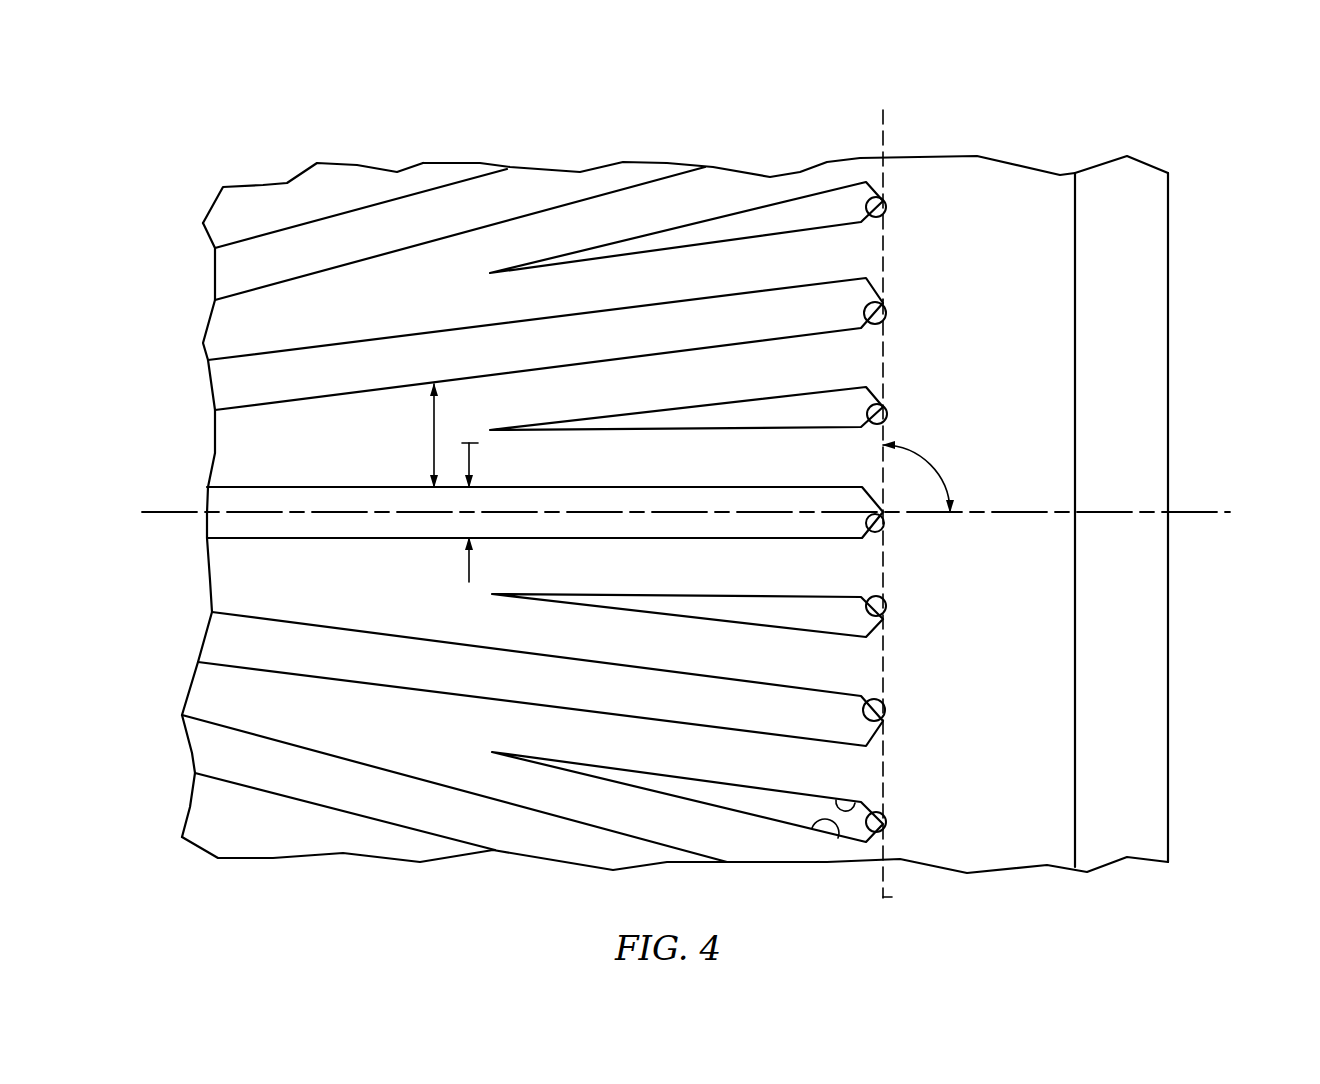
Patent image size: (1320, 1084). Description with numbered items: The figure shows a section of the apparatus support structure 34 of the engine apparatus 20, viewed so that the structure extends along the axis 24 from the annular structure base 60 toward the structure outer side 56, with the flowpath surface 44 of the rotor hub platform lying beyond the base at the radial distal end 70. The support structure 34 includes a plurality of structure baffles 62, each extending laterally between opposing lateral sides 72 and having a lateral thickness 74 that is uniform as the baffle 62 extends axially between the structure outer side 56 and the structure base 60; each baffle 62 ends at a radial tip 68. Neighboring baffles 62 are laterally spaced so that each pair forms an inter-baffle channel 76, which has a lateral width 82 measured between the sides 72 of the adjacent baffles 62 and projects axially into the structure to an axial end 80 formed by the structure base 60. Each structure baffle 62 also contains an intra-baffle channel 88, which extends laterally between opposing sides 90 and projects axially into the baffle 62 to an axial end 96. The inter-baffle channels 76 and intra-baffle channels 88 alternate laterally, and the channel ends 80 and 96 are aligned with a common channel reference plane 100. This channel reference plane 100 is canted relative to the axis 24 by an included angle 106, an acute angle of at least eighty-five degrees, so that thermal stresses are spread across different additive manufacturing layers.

The engine apparatus 20 is at (1230, 145).
The axis 24 is at (1217, 513).
The apparatus support structure 34 is at (977, 133).
The flowpath surface 44 is at (1168, 428).
The structure outer side 56 is at (318, 198).
The structure base 60 is at (1070, 167).
The structure baffle 62 is at (205, 455).
The radial tip 68 is at (887, 257).
The radial distal end 70 is at (1120, 188).
The lateral sides 72 is at (232, 412).
The lateral thickness 74 is at (434, 436).
The inter-baffle channel 76 is at (243, 265).
The axial end 80 is at (884, 315).
The lateral width 82 is at (472, 443).
The intra-baffle channel 88 is at (798, 215).
The sides 90 is at (855, 803).
The axial end 96 is at (882, 209).
The channel reference plane 100 is at (885, 897).
The included angle 106 is at (933, 462).